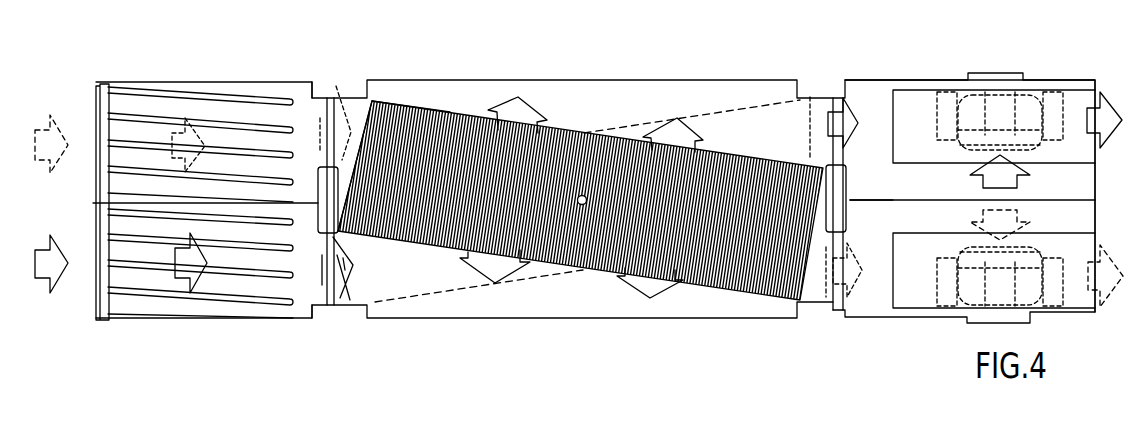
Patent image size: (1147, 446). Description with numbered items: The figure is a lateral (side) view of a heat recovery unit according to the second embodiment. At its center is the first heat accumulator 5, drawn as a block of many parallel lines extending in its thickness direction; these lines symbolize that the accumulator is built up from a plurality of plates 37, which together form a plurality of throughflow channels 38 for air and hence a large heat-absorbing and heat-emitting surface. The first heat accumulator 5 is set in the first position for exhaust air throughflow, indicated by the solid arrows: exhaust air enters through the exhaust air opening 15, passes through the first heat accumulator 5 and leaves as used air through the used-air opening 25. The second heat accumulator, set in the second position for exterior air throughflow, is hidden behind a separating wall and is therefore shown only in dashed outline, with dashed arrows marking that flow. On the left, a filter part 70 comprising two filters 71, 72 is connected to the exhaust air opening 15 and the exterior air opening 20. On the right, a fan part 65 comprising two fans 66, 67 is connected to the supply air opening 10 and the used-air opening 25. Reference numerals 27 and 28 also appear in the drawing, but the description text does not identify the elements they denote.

The first heat accumulator 5 is at (728, 126).
The supply air opening 10 is at (852, 252).
The exhaust air opening 15 is at (330, 308).
The exterior air opening 20 is at (343, 88).
The used-air opening 25 is at (820, 142).
The seal 27 is at (849, 184).
The pivot 28 is at (352, 238).
The plates 37 is at (373, 100).
The throughflow channels 38 is at (400, 110).
The fan part 65 is at (876, 70).
The fan 66 is at (1041, 95).
The fan 67 is at (1082, 228).
The filter part 70 is at (205, 196).
The filter 71 is at (155, 110).
The filter 72 is at (213, 297).